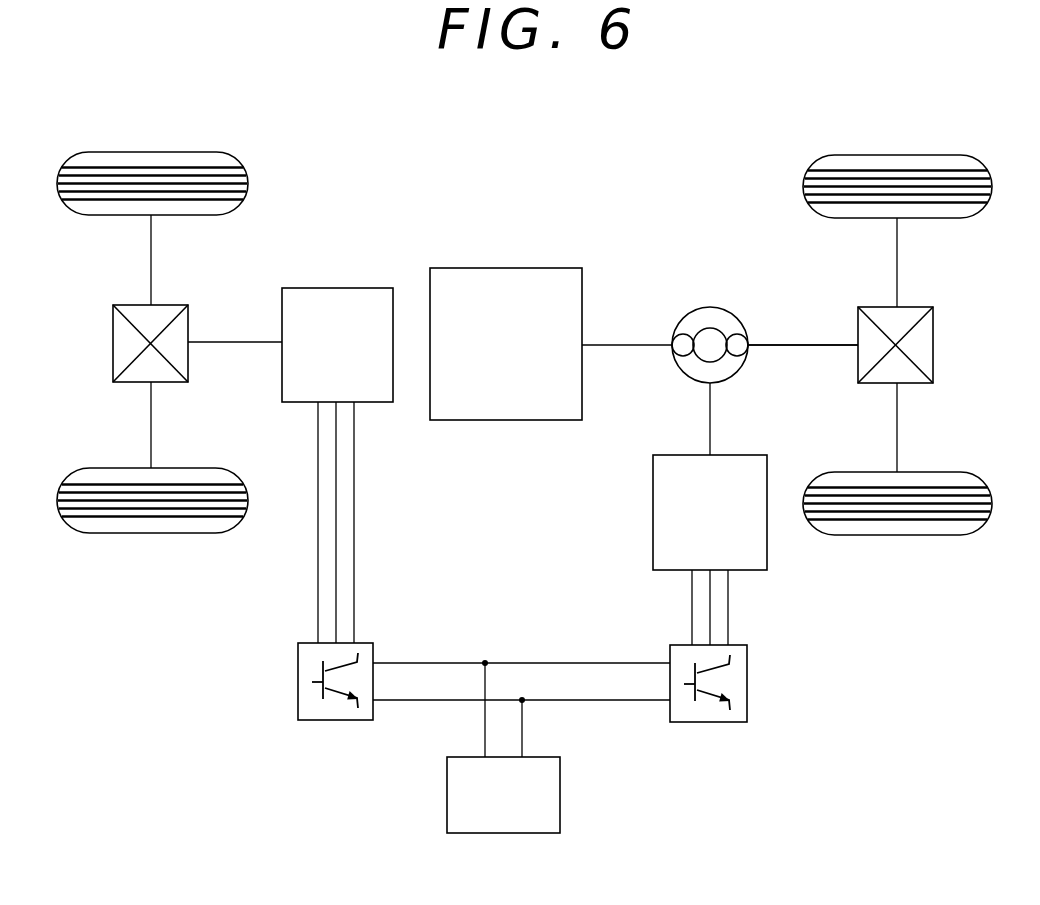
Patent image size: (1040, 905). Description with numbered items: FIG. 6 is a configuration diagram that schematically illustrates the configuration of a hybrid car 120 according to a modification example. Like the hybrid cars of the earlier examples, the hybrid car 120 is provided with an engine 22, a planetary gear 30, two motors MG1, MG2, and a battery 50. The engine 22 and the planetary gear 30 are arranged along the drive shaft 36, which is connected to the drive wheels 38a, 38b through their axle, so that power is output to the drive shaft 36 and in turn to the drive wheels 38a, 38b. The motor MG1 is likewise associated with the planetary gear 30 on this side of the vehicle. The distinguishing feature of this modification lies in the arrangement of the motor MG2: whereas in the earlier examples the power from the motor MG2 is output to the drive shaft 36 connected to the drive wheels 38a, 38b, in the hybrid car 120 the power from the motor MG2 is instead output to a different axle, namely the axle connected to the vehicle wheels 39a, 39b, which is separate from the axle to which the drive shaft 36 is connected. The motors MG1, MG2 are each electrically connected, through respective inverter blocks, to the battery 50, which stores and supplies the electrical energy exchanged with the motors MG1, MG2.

The hybrid car 120 is at (722, 132).
The engine 22 is at (505, 268).
The planetary gear 30 is at (710, 307).
The drive shaft 36 is at (783, 343).
The drive wheel 38a is at (897, 155).
The drive wheel 38b is at (897, 535).
The vehicle wheel 39a is at (152, 152).
The vehicle wheel 39b is at (150, 533).
The battery 50 is at (560, 797).
The motor MG1 is at (653, 512).
The motor MG2 is at (338, 288).